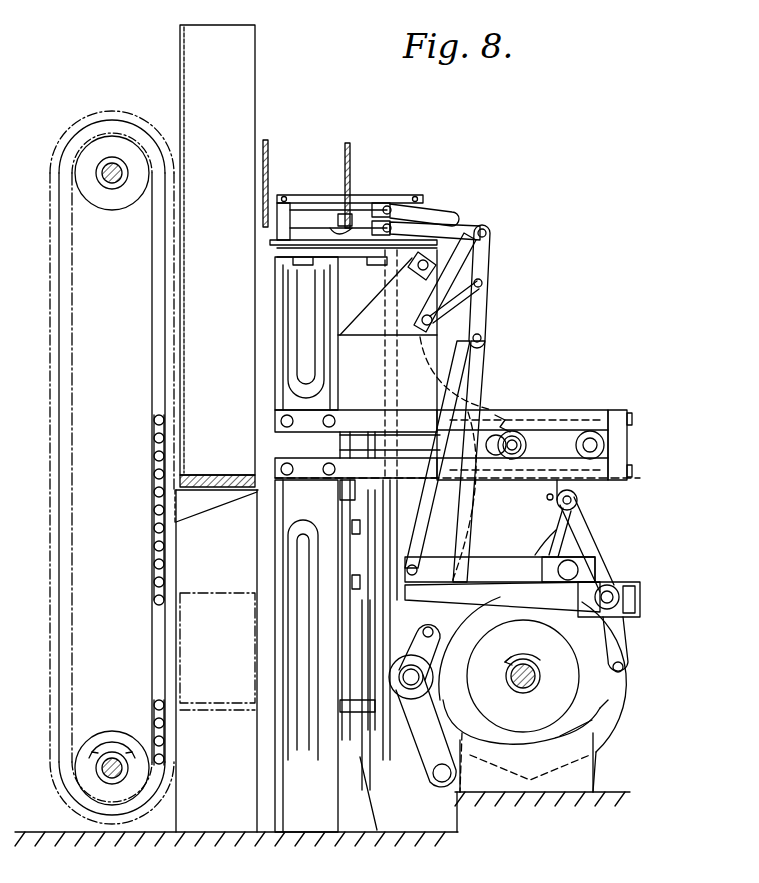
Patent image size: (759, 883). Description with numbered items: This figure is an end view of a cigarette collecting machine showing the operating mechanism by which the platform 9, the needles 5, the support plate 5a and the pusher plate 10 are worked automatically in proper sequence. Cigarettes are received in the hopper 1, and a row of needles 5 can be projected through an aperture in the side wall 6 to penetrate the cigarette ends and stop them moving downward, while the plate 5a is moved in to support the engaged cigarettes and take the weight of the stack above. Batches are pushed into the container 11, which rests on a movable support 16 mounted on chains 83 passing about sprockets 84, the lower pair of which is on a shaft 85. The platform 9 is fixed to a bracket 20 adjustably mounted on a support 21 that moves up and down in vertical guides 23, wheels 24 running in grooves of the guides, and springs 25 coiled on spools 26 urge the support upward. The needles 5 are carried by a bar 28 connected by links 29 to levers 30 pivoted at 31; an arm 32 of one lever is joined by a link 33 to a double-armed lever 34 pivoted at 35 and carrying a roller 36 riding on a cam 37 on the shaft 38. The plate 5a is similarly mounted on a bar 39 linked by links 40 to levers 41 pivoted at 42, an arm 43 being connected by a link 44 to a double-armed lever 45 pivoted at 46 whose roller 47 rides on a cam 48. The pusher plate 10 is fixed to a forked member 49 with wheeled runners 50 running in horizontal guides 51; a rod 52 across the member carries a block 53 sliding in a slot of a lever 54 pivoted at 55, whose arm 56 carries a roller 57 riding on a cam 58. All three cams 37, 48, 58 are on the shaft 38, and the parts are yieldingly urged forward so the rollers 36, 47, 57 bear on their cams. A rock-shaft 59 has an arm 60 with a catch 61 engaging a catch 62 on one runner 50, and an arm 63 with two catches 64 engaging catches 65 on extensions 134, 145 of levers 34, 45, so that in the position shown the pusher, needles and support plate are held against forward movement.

The hopper 1 is at (304, 160).
The needles 5 is at (349, 208).
The plate 5a is at (353, 209).
The side wall 6 is at (348, 152).
The platform 9 is at (275, 470).
The pusher plate 10 is at (376, 348).
The container 11 is at (240, 82).
The movable support 16 is at (216, 505).
The bracket 20 is at (337, 492).
The support 21 is at (352, 525).
The vertical guides 23 is at (366, 640).
The wheels 24 is at (352, 565).
The springs 25 is at (400, 442).
The spools 26 is at (412, 663).
The bar 28 is at (385, 204).
The links 29 is at (394, 212).
The levers 30 is at (449, 210).
The pivot 31 is at (420, 278).
The arm 32 is at (478, 265).
The link 33 is at (462, 306).
The lever 34 is at (488, 572).
The pivot 35 is at (578, 569).
The roller 36 is at (606, 656).
The cam 37 is at (513, 740).
The shaft 38 is at (509, 677).
The bar 39 is at (397, 228).
The links 40 is at (483, 228).
The levers 41 is at (487, 236).
The pivot 42 is at (482, 284).
The arm 43 is at (482, 339).
The link 44 is at (490, 362).
The lever 45 is at (452, 615).
The pivot 46 is at (606, 584).
The roller 47 is at (620, 676).
The cam 48 is at (608, 704).
The forked member 49 is at (470, 366).
The wheeled runners 50 is at (550, 420).
The horizontal guides 51 is at (597, 418).
The rod 52 is at (505, 414).
The block 53 is at (520, 420).
The lever 54 is at (478, 522).
The pivot 55 is at (405, 688).
The arm 56 is at (415, 730).
The roller 57 is at (432, 778).
The cam 58 is at (592, 719).
The rock-shaft 59 is at (581, 445).
The arm 60 is at (531, 446).
The catch 61 is at (548, 498).
The catch 62 is at (552, 521).
The arm 63 is at (576, 498).
The catches 64 is at (577, 506).
The catches 65 is at (553, 538).
The chains 83 is at (153, 488).
The sprockets 84 is at (112, 138).
The shaft 85 is at (112, 760).
The extension 134 is at (549, 570).
The extension 145 is at (582, 540).